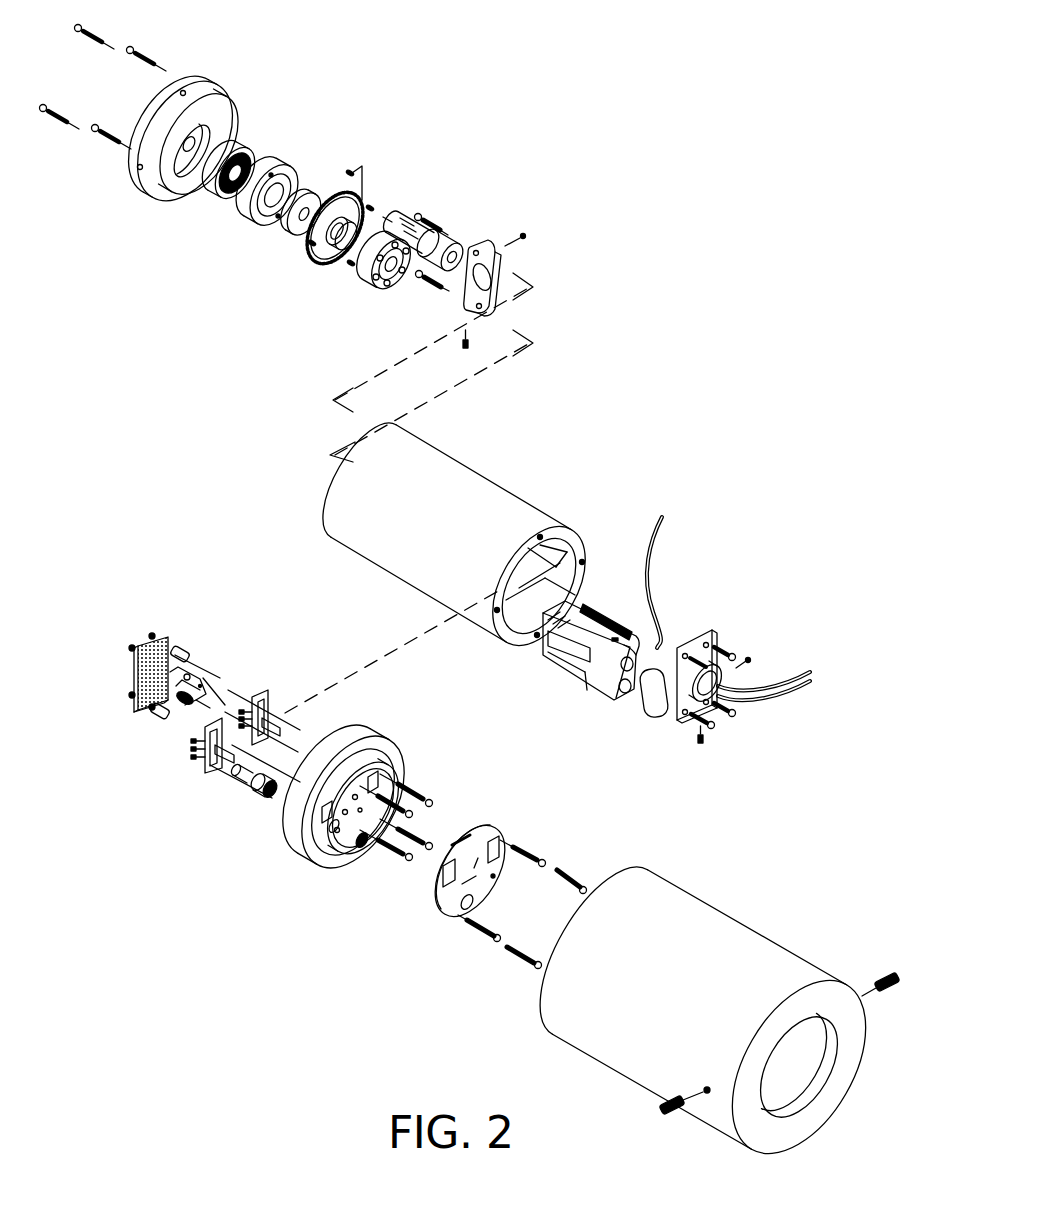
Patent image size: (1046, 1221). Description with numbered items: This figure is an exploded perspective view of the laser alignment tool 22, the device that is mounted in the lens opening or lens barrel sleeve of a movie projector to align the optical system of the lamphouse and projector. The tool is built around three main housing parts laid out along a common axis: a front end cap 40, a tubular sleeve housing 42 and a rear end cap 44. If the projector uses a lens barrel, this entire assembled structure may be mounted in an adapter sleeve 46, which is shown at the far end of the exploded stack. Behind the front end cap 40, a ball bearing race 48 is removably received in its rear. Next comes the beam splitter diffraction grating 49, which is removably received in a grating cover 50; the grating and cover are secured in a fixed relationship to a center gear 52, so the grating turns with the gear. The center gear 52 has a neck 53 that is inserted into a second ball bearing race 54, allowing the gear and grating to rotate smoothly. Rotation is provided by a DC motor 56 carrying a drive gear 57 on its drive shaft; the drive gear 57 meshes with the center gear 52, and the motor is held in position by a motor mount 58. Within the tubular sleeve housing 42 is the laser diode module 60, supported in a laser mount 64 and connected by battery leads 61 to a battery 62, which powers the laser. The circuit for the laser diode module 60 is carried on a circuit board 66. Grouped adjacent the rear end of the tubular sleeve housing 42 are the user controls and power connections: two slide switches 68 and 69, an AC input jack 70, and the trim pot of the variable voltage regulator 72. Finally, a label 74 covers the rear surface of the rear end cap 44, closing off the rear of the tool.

The laser alignment tool 22 is at (766, 324).
The front end cap 40 is at (214, 114).
The tubular sleeve housing 42 is at (466, 509).
The rear end cap 44 is at (311, 850).
The adapter sleeve 46 is at (720, 984).
The ball bearing race 48 is at (197, 205).
The beam splitter diffraction grating 49 is at (266, 252).
The grating cover 50 is at (307, 148).
The center gear 52 is at (298, 274).
The neck 53 is at (292, 305).
The ball bearing race 54 is at (332, 333).
The DC motor 56 is at (467, 213).
The drive gear 57 is at (409, 151).
The motor mount 58 is at (518, 256).
The laser diode module 60 is at (695, 577).
The battery leads 61 is at (624, 721).
The battery 62 is at (569, 671).
The laser mount 64 is at (743, 636).
The circuit board 66 is at (111, 709).
The slide switch 68 is at (167, 802).
The slide switch 69 is at (294, 687).
The AC input jack 70 is at (207, 839).
The trim pot of variable voltage regulator 72 is at (214, 652).
The label 74 is at (428, 920).